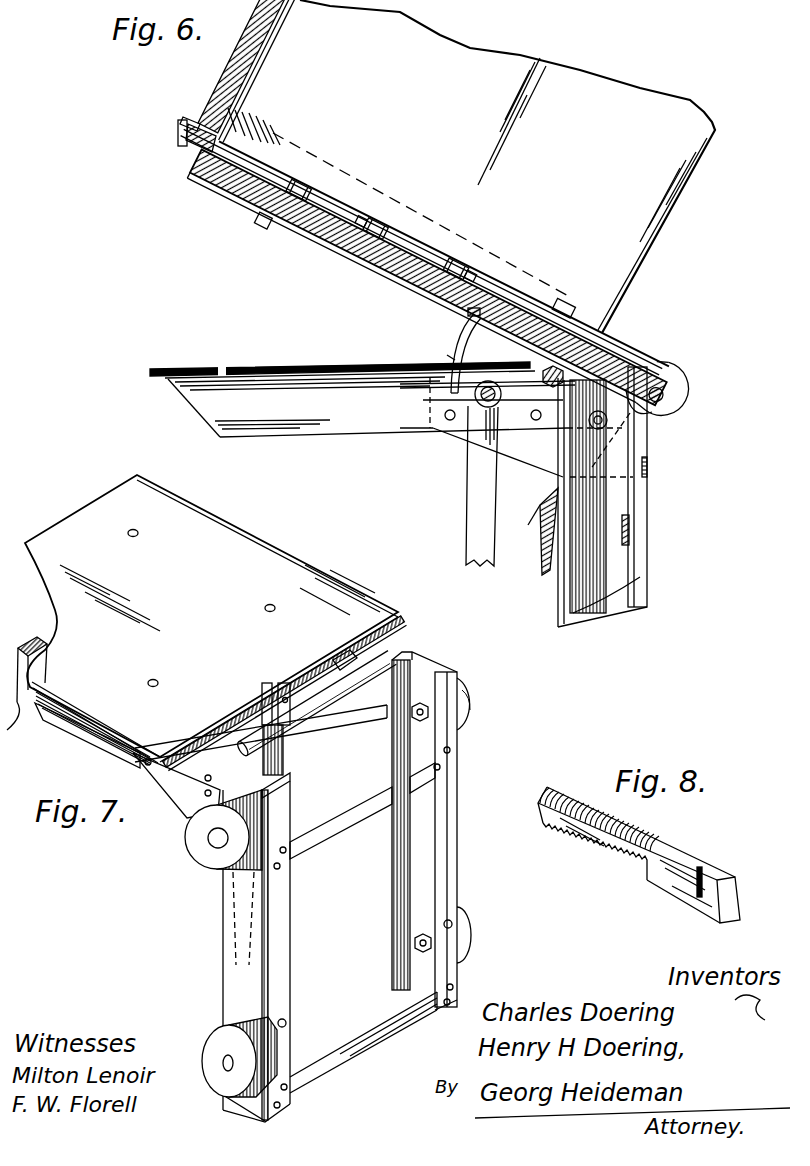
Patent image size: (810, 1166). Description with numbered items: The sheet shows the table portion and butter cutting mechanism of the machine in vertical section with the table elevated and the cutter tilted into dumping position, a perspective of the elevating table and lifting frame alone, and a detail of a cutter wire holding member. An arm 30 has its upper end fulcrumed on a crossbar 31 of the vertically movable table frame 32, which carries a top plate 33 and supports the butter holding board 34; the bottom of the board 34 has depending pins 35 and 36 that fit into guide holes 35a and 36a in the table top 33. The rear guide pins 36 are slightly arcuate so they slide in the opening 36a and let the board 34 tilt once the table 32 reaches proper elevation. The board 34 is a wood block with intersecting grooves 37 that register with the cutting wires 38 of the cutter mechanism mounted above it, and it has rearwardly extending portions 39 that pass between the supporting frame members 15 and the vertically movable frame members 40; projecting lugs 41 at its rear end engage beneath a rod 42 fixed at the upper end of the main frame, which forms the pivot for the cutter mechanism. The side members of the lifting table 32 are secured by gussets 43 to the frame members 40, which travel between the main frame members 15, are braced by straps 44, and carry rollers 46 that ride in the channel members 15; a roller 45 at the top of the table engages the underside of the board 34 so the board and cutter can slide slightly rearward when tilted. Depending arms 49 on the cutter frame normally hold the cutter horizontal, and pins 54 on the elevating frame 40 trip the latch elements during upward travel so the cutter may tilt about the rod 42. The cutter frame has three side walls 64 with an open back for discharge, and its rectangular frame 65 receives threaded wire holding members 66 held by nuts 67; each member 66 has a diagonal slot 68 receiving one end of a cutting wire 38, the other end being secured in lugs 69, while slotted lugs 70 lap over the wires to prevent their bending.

In FIG. 6, the supporting frame member 15 is at (648, 604).
In FIG. 6, the arm 30 is at (470, 490).
In FIG. 7, the arm 30 is at (284, 757).
In FIG. 6, the crossbar 31 is at (482, 406).
In FIG. 7, the crossbar 31 is at (340, 643).
In FIG. 6, the vertically movable table frame 32 is at (222, 436).
In FIG. 7, the vertically movable table frame 32 is at (22, 712).
In FIG. 6, the top plate 33 is at (154, 372).
In FIG. 7, the top plate 33 is at (72, 757).
In FIG. 6, the butter holding board 34 is at (368, 262).
In FIG. 6, the depending pin 35 is at (270, 220).
In FIG. 6, the guide hole 35a is at (246, 338).
In FIG. 7, the guide hole 35a is at (139, 535).
In FIG. 6, the guide pin 36 is at (444, 334).
In FIG. 6, the guide hole 36a is at (447, 355).
In FIG. 7, the guide hole 36a is at (158, 682).
In FIG. 6, the intersecting groove 37 is at (378, 220).
In FIG. 6, the cutting wire 38 is at (301, 185).
In FIG. 6, the rearwardly extending portion 39 is at (678, 372).
In FIG. 6, the vertically movable frame member 40 is at (640, 578).
In FIG. 7, the vertically movable frame member 40 is at (290, 893).
In FIG. 6, the projecting lug 41 is at (652, 416).
In FIG. 6, the rod 42 is at (668, 394).
In FIG. 6, the gusset 43 is at (530, 462).
In FIG. 7, the gusset 43 is at (383, 722).
In FIG. 6, the strap 44 is at (631, 531).
In FIG. 7, the strap 44 is at (378, 818).
In FIG. 6, the roller 45 is at (543, 364).
In FIG. 7, the roller 45 is at (325, 705).
In FIG. 6, the roller 46 is at (637, 430).
In FIG. 7, the roller 46 is at (218, 832).
In FIG. 6, the depending arm 49 is at (545, 548).
In FIG. 7, the pin 54 is at (458, 926).
In FIG. 6, the side wall 64 is at (525, 57).
In FIG. 6, the rectangular frame 65 is at (186, 140).
In FIG. 6, the threaded wire holding member 66 is at (183, 122).
In FIG. 8, the threaded wire holding member 66 is at (685, 852).
In FIG. 6, the nut 67 is at (178, 131).
In FIG. 8, the diagonally arranged slot 68 is at (704, 881).
In FIG. 6, the lug 69 is at (566, 302).
In FIG. 6, the slotted lug 70 is at (237, 124).